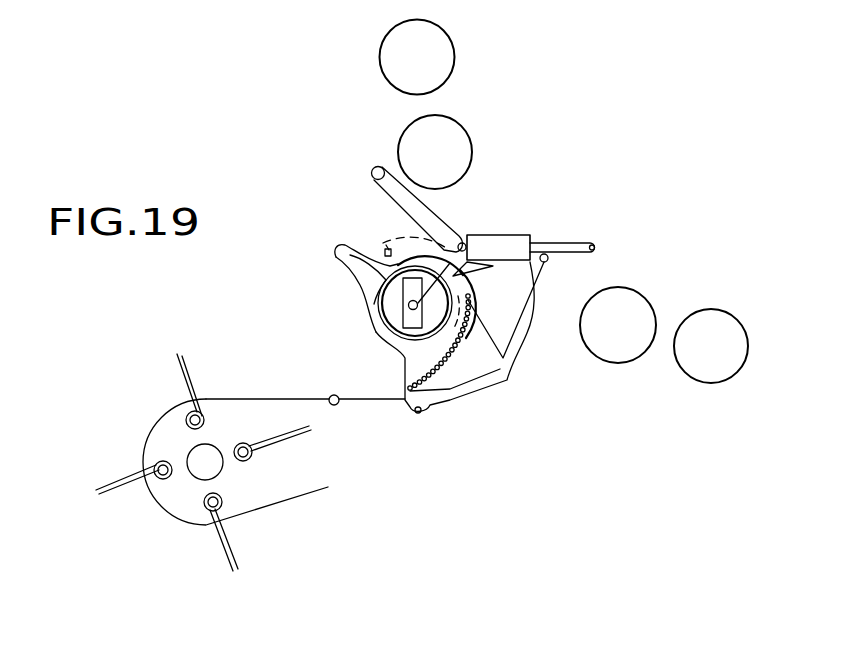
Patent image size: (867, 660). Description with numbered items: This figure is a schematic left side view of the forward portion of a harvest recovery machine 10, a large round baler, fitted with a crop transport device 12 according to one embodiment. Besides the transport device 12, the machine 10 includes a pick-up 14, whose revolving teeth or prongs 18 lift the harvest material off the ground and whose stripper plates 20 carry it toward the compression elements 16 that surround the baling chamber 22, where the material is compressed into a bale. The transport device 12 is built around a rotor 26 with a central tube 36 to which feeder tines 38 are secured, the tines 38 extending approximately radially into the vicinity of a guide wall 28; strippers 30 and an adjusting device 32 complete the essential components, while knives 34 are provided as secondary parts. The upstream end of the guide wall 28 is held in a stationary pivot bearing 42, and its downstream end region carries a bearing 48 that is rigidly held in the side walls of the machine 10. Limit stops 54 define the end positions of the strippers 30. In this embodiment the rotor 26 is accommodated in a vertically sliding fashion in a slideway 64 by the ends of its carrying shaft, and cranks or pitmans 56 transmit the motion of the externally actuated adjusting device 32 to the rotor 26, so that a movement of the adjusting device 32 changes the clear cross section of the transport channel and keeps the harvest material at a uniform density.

The harvest recovery machine 10 is at (165, 323).
The crop transport device 12 is at (302, 327).
The pick-up 14 is at (255, 533).
The compression elements 16 is at (450, 124).
The teeth or prongs 18 is at (127, 475).
The stripper plates 20 is at (281, 394).
The baling chamber 22 is at (712, 150).
The rotor 26 is at (385, 352).
The guide wall 28 is at (527, 333).
The strippers 30 is at (475, 316).
The adjusting device 32 is at (503, 235).
The knives 34 is at (493, 378).
The tube 36 is at (374, 303).
The feeder tines 38 is at (350, 256).
The pivot bearing 42 is at (336, 406).
The bearing 48 is at (549, 258).
The limit stops 54 is at (388, 249).
The cranks or pitmans 56 is at (440, 212).
The slideway 64 is at (383, 254).